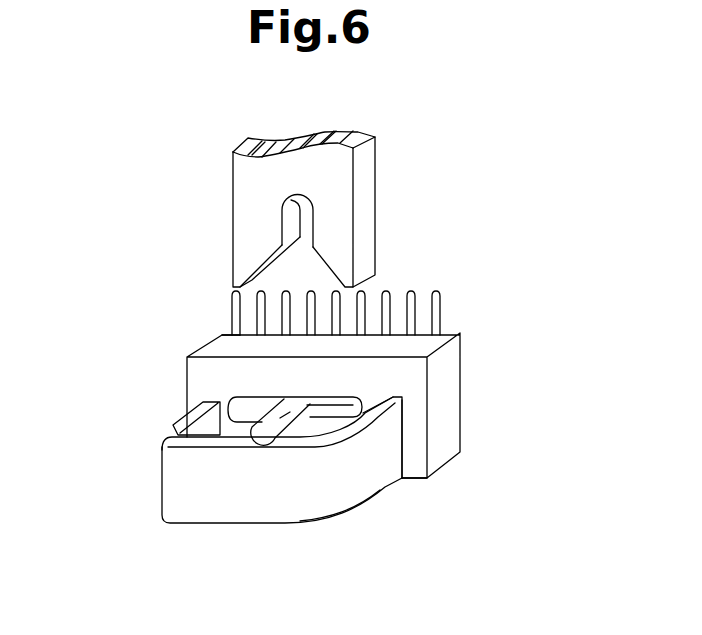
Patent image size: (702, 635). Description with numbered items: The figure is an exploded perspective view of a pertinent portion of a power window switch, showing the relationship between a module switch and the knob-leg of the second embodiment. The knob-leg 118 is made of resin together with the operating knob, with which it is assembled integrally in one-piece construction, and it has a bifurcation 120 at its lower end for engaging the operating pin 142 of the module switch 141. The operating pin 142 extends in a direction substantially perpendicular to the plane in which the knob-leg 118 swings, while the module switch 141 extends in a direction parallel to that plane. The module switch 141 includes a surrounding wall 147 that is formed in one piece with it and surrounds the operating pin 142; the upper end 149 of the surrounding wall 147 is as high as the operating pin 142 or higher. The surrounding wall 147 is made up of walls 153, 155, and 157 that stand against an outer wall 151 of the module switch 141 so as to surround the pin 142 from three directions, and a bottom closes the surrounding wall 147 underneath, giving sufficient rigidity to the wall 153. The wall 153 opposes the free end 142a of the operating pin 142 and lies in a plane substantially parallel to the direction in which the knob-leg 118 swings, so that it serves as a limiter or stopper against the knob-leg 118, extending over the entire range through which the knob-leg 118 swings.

The knob-leg 118 is at (312, 209).
The bifurcation 120 is at (282, 229).
The module switch 141 is at (355, 386).
The operating pin 142 is at (363, 413).
The free end of the operating pin 142a is at (256, 432).
The surrounding wall 147 is at (294, 497).
The upper end of the surrounding wall 149 is at (188, 420).
The outer wall of the module switch 151 is at (243, 387).
The wall 153 is at (293, 490).
The wall 155 is at (372, 473).
The wall 157 is at (163, 425).